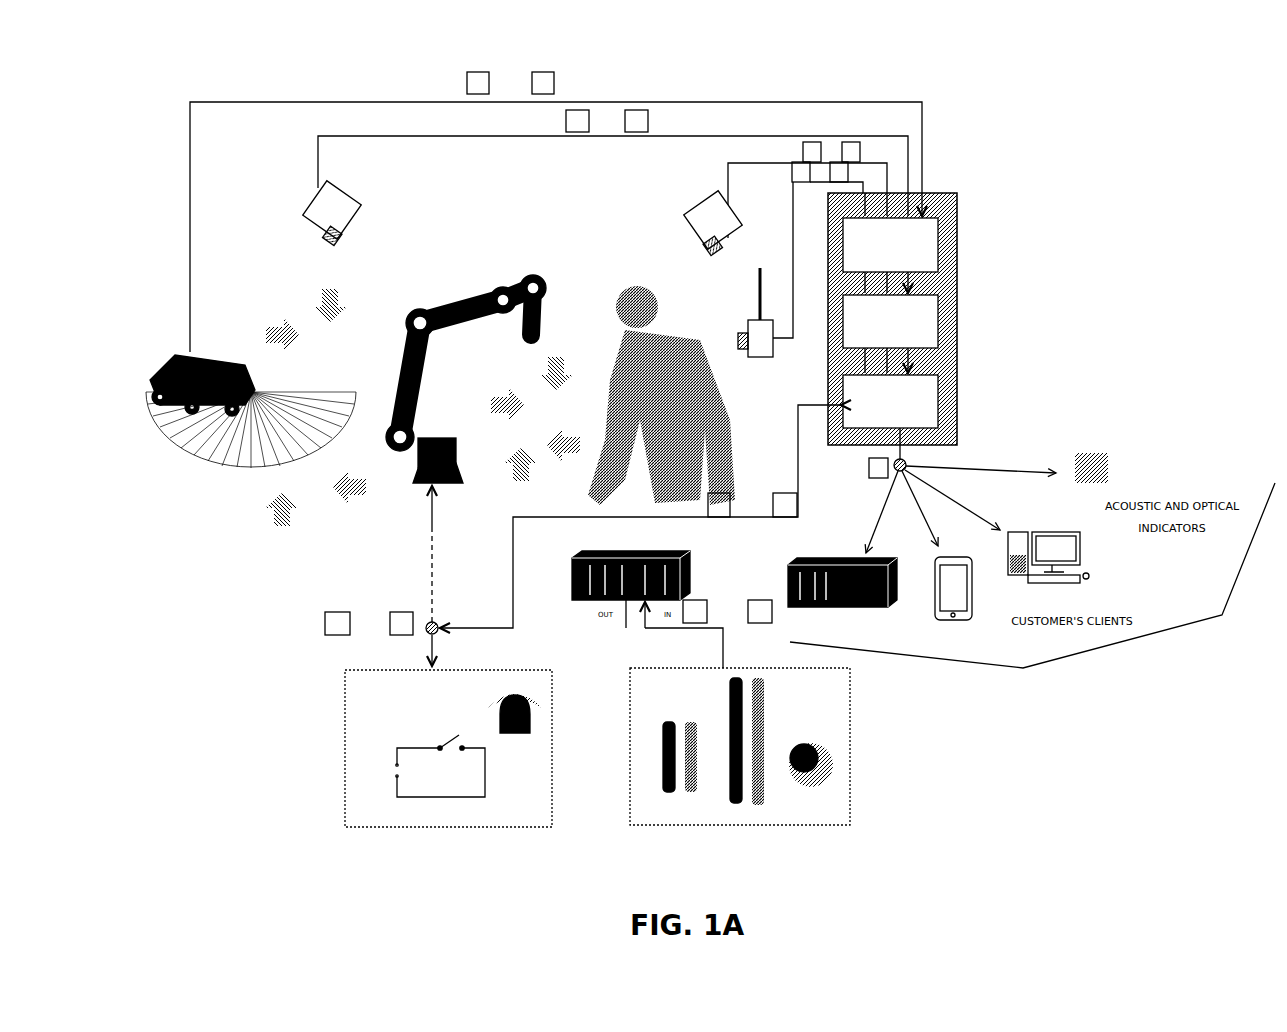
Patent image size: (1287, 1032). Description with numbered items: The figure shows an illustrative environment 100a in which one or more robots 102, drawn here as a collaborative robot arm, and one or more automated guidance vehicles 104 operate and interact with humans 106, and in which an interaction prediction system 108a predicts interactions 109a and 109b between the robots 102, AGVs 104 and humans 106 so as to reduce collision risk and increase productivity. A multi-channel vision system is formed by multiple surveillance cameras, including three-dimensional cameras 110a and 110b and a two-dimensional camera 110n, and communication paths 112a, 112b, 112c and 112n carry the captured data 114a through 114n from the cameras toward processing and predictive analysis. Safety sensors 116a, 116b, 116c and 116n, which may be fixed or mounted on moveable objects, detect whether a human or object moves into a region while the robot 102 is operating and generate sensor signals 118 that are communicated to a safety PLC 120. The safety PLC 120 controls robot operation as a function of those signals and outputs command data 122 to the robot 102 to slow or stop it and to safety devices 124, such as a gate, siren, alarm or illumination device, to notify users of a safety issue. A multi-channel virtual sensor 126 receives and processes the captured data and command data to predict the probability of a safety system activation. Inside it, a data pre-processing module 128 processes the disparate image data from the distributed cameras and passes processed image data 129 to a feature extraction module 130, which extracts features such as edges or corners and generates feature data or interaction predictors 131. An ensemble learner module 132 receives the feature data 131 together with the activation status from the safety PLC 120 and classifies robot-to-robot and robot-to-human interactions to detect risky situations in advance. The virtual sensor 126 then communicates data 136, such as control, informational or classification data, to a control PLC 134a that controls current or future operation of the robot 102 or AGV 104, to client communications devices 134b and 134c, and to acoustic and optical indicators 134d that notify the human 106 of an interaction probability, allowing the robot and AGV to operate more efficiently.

The environment 100a is at (207, 39).
The robot 102 is at (480, 300).
The automated guidance vehicle 104 is at (155, 372).
The human 106 is at (687, 333).
The interaction prediction system 108a is at (1166, 736).
The interactions 109a is at (232, 493).
The interactions 109b is at (531, 391).
The camera 110a is at (310, 200).
The camera 110b is at (686, 214).
The camera 110n is at (765, 297).
The communication path 112a is at (190, 185).
The communication path 112b is at (458, 137).
The communication path 112c is at (727, 183).
The communication path 112n is at (792, 224).
The captured data 114a is at (662, 738).
The captured data 114n is at (825, 757).
The safety sensor 116a is at (463, 85).
The safety sensor 116b is at (564, 125).
The safety sensor 116c is at (801, 141).
The safety sensor 116n is at (790, 170).
The sensor signals 118 is at (709, 608).
The safety programmable logic controller 120 is at (683, 583).
The command data 122 is at (785, 490).
The safety device 124 is at (345, 750).
The multi-channel virtual sensor 126 is at (958, 218).
The data pre-processing module 128 is at (938, 240).
The processed image data 129 is at (930, 284).
The feature extraction module 130 is at (938, 315).
The feature data 131 is at (930, 364).
The ensemble learner module 132 is at (938, 398).
The control PLC 134a is at (846, 565).
The client communications device 134b is at (955, 619).
The client communications device 134c is at (1082, 553).
The acoustic and optical indicators 134d is at (1110, 458).
The data 136 is at (868, 477).